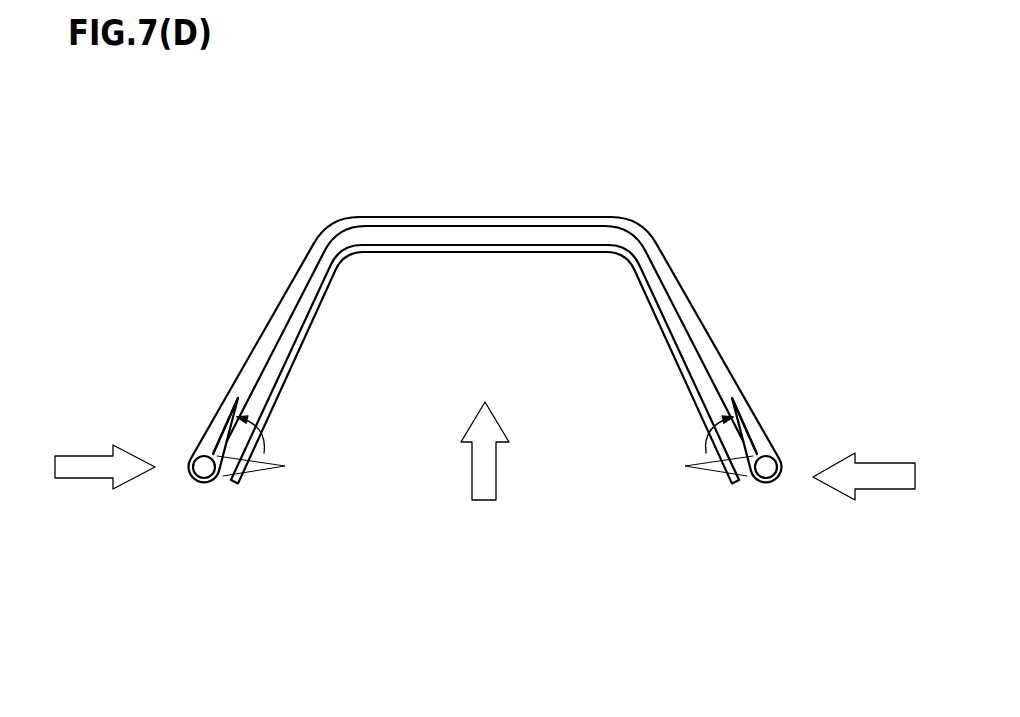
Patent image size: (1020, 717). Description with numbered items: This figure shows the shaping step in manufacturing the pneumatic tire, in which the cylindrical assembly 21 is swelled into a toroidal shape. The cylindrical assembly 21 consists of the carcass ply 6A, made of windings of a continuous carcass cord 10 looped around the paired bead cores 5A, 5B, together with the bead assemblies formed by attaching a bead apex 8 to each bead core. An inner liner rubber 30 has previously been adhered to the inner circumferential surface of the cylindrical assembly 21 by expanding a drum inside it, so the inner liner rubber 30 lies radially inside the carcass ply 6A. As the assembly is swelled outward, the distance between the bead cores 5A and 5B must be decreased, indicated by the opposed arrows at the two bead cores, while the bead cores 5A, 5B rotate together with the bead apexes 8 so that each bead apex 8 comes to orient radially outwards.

The carcass ply 6A is at (683, 248).
The carcass cord 10 is at (297, 272).
The cylindrical assembly 21 is at (271, 309).
The inner liner rubber 30 is at (282, 389).
The bead apex 8 is at (222, 424).
The bead core 5A is at (205, 466).
The bead core 5B is at (766, 466).